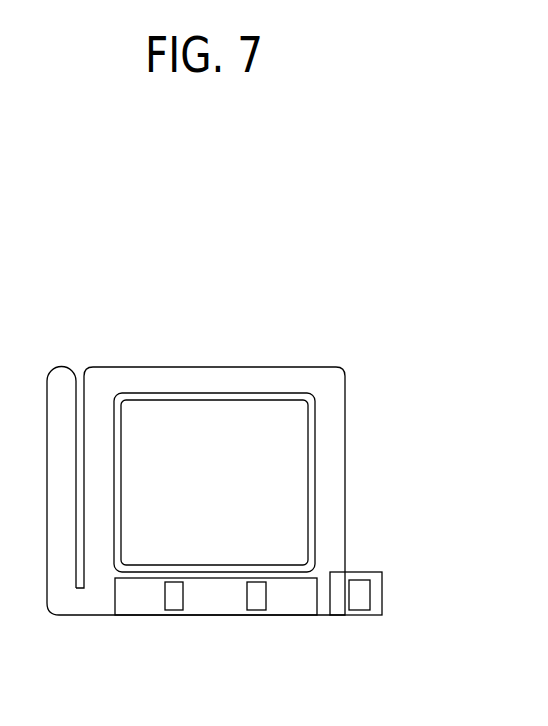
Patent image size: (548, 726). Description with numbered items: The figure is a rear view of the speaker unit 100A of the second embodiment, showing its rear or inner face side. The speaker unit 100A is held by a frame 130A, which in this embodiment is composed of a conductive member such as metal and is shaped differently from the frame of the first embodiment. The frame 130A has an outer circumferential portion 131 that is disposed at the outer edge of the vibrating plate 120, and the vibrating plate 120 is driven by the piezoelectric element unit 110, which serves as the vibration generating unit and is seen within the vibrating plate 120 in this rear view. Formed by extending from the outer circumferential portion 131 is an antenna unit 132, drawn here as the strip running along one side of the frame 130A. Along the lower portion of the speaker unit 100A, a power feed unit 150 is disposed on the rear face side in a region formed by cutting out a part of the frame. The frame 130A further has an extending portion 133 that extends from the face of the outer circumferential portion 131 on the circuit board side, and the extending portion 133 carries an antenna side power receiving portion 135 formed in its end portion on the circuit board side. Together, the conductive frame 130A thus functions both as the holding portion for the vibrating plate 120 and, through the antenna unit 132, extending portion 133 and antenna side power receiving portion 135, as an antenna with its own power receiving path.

The speaker unit 100A is at (391, 410).
The frame 130A is at (308, 358).
The outer circumferential portion 131 is at (153, 378).
The antenna unit 132 is at (53, 376).
The extending portion 133 is at (345, 598).
The antenna side power receiving portion 135 is at (360, 598).
The vibrating plate 120 is at (296, 468).
The piezoelectric element unit 110 is at (237, 505).
The power feed unit 150 is at (258, 600).